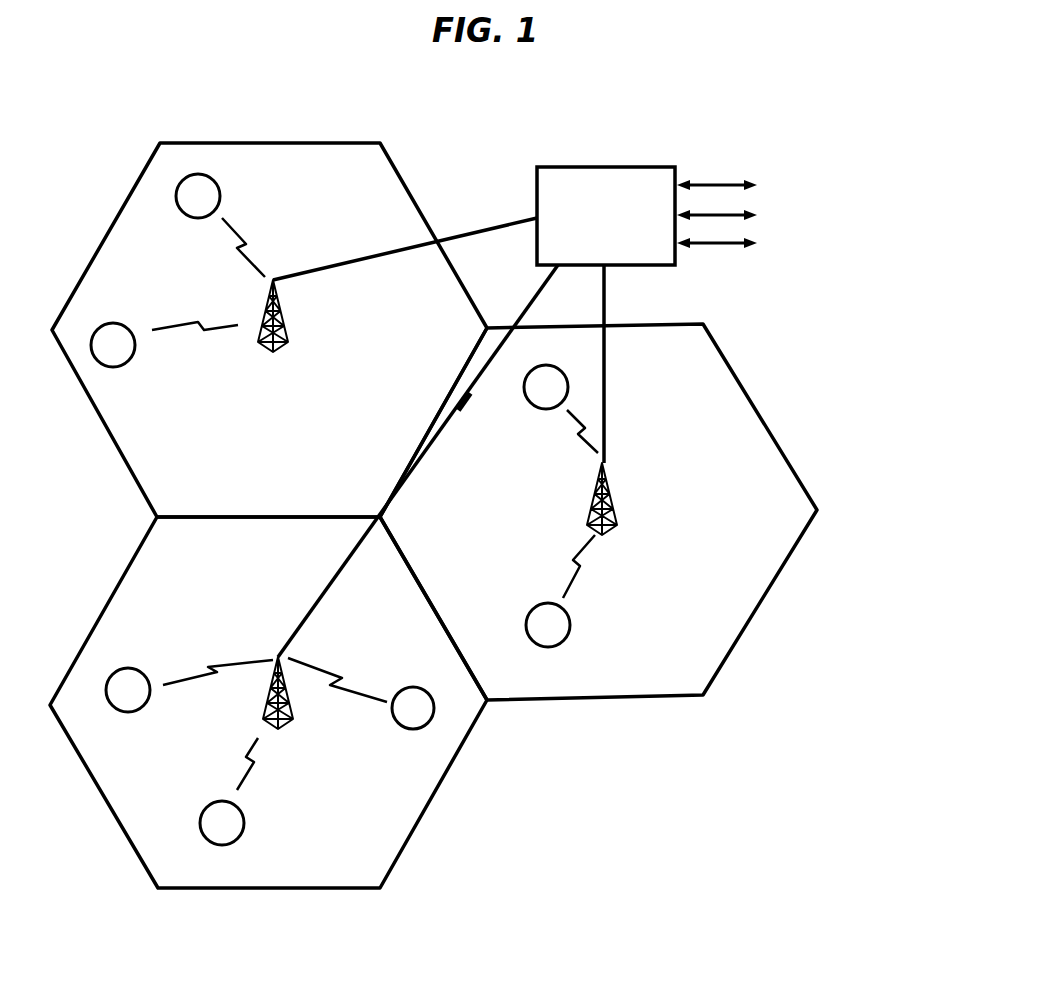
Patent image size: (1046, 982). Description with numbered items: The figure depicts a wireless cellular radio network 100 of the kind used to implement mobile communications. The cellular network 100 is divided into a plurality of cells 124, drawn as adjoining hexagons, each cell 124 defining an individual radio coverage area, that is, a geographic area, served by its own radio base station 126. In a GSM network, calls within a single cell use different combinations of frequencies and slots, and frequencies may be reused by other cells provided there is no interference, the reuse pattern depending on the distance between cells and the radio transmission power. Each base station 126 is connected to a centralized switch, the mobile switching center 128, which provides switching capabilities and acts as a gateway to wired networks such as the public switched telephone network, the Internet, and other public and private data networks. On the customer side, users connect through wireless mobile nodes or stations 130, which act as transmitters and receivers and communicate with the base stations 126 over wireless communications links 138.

The cellular network 100 is at (108, 149).
The cell 124 is at (95, 415).
The radio base station 126 is at (290, 333).
The mobile switching center 128 is at (598, 165).
The mobile node 130 is at (222, 188).
The wireless communications link 138 is at (237, 240).